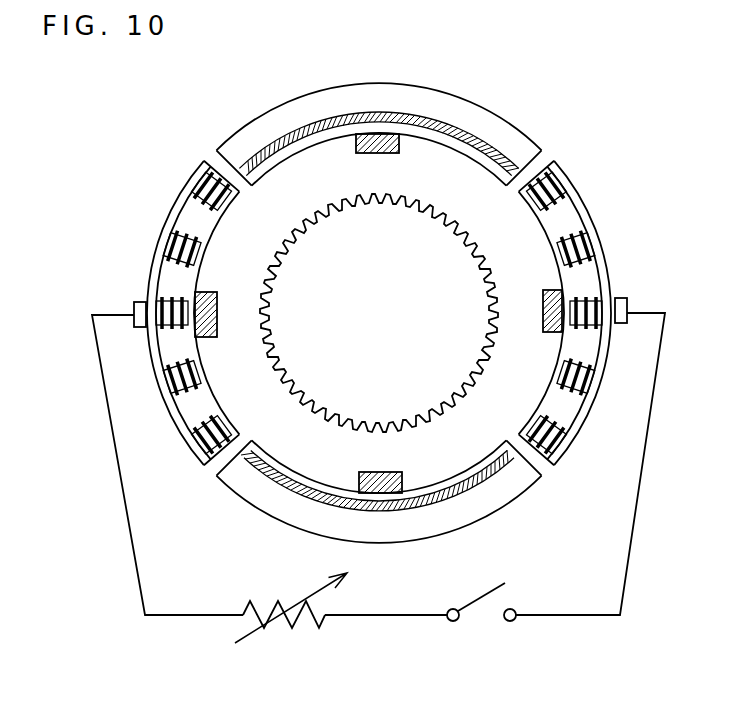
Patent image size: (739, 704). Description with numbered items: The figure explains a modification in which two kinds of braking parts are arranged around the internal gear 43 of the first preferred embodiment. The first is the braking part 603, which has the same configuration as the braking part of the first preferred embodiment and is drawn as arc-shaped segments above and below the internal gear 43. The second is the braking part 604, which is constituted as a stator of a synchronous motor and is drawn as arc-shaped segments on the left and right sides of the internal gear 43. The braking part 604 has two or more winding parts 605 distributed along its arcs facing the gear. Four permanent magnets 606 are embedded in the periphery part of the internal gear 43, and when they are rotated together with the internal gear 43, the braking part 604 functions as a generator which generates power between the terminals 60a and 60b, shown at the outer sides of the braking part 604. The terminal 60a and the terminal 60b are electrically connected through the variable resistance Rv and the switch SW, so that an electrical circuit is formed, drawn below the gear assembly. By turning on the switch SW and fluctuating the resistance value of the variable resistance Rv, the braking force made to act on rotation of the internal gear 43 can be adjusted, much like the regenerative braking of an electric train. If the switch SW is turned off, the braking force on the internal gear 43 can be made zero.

The internal gear 43 is at (202, 172).
The braking part 603 is at (513, 123).
The braking part 604 is at (623, 231).
The winding parts 605 is at (546, 172).
The permanent magnets 606 is at (392, 130).
The terminal 60a is at (140, 302).
The terminal 60b is at (621, 297).
The variable resistance Rv is at (251, 583).
The switch SW is at (517, 570).